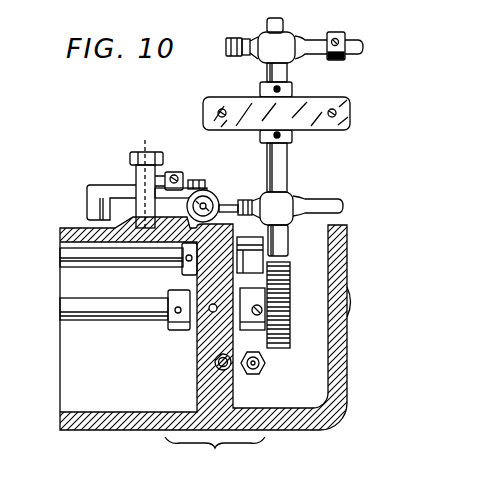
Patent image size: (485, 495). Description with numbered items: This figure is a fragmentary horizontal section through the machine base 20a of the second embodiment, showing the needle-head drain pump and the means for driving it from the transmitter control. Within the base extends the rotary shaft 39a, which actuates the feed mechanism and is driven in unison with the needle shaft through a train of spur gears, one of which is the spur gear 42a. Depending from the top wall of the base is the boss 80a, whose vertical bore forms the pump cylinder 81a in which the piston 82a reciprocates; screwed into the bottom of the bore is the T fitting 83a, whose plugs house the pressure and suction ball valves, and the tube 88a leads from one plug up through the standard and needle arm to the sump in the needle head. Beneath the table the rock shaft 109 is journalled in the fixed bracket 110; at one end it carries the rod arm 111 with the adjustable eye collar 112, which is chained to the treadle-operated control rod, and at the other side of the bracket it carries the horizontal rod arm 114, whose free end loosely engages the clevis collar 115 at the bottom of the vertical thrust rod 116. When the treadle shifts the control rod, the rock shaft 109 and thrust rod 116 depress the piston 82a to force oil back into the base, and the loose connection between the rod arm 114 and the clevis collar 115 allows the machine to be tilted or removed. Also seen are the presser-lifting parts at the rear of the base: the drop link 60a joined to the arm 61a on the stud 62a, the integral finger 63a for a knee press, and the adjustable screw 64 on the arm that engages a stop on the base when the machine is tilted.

The machine base 20a is at (215, 455).
The rotary shaft 39a is at (113, 312).
The spur gear 42a is at (290, 297).
The drop link 60a is at (188, 191).
The arm 61a is at (166, 186).
The stud 62a is at (141, 152).
The finger 63a is at (91, 186).
The adjustable screw 64 is at (183, 172).
The boss 80a is at (214, 390).
The pump cylinder 81a is at (216, 359).
The piston 82a is at (218, 366).
The T fitting 83a is at (242, 373).
The tube 88a is at (266, 365).
The rock shaft 109 is at (288, 163).
The fixed bracket 110 is at (351, 110).
The rod arm 111 is at (365, 43).
The eye collar 112 is at (342, 40).
The rod arm 114 is at (344, 205).
The clevis collar 115 is at (212, 193).
The thrust rod 116 is at (218, 196).